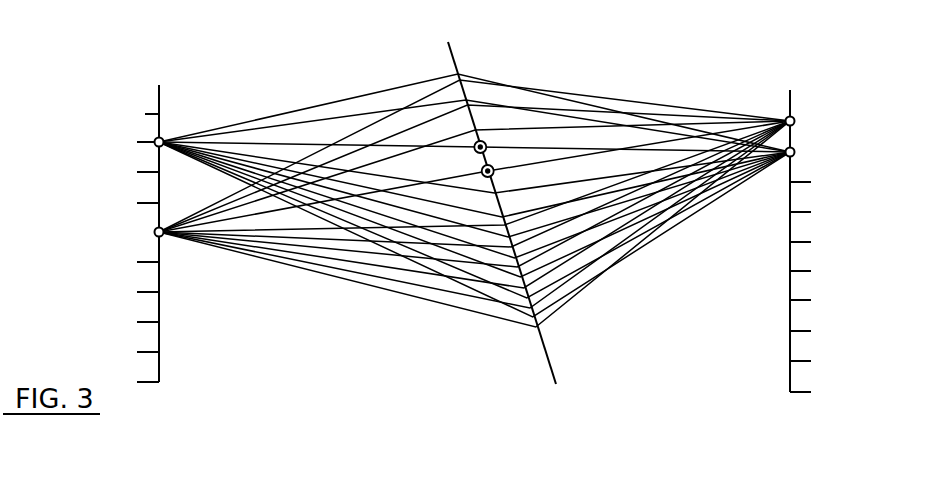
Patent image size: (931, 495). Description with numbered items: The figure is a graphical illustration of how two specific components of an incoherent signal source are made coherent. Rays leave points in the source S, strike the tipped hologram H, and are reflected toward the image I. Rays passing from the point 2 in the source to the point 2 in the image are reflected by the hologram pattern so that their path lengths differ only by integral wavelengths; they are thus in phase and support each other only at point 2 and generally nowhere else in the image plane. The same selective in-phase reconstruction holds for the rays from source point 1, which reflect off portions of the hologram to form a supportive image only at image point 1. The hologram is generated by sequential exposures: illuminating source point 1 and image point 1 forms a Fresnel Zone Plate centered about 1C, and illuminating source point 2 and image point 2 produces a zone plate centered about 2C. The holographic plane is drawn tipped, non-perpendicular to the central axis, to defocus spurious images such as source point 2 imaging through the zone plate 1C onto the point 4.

The source S is at (140, 210).
The hologram H is at (475, 200).
The image I is at (776, 216).
The source point 1 / image point 1 is at (151, 232).
The source point 2 / image point 2 is at (810, 152).
The point 4 is at (807, 213).
The Fresnel Zone Plate center 1C is at (500, 163).
The zone plate center 2C is at (492, 139).